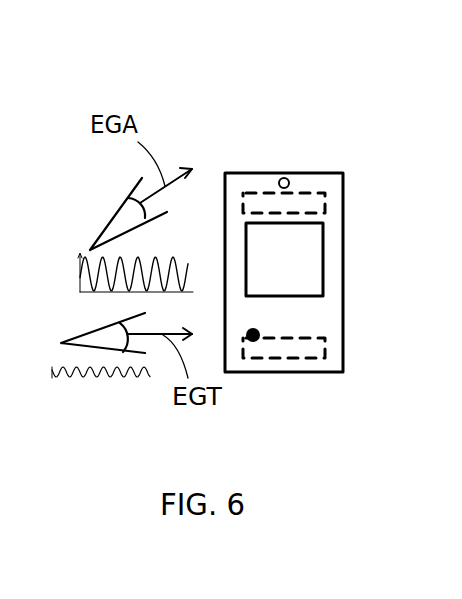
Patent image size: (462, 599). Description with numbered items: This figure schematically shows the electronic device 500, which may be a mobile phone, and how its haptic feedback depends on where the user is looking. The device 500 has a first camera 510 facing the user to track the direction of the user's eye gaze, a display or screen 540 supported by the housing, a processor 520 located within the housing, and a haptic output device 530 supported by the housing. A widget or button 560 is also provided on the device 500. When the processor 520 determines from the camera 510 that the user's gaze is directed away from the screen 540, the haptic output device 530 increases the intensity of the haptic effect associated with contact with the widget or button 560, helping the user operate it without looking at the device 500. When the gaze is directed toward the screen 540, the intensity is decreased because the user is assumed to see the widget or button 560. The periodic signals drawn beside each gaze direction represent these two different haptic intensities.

The electronic device 500 is at (236, 127).
The first camera 510 is at (290, 178).
The processor 520 is at (328, 203).
The haptic output device 530 is at (330, 350).
The display 540 is at (318, 263).
The widget or button 560 is at (258, 332).